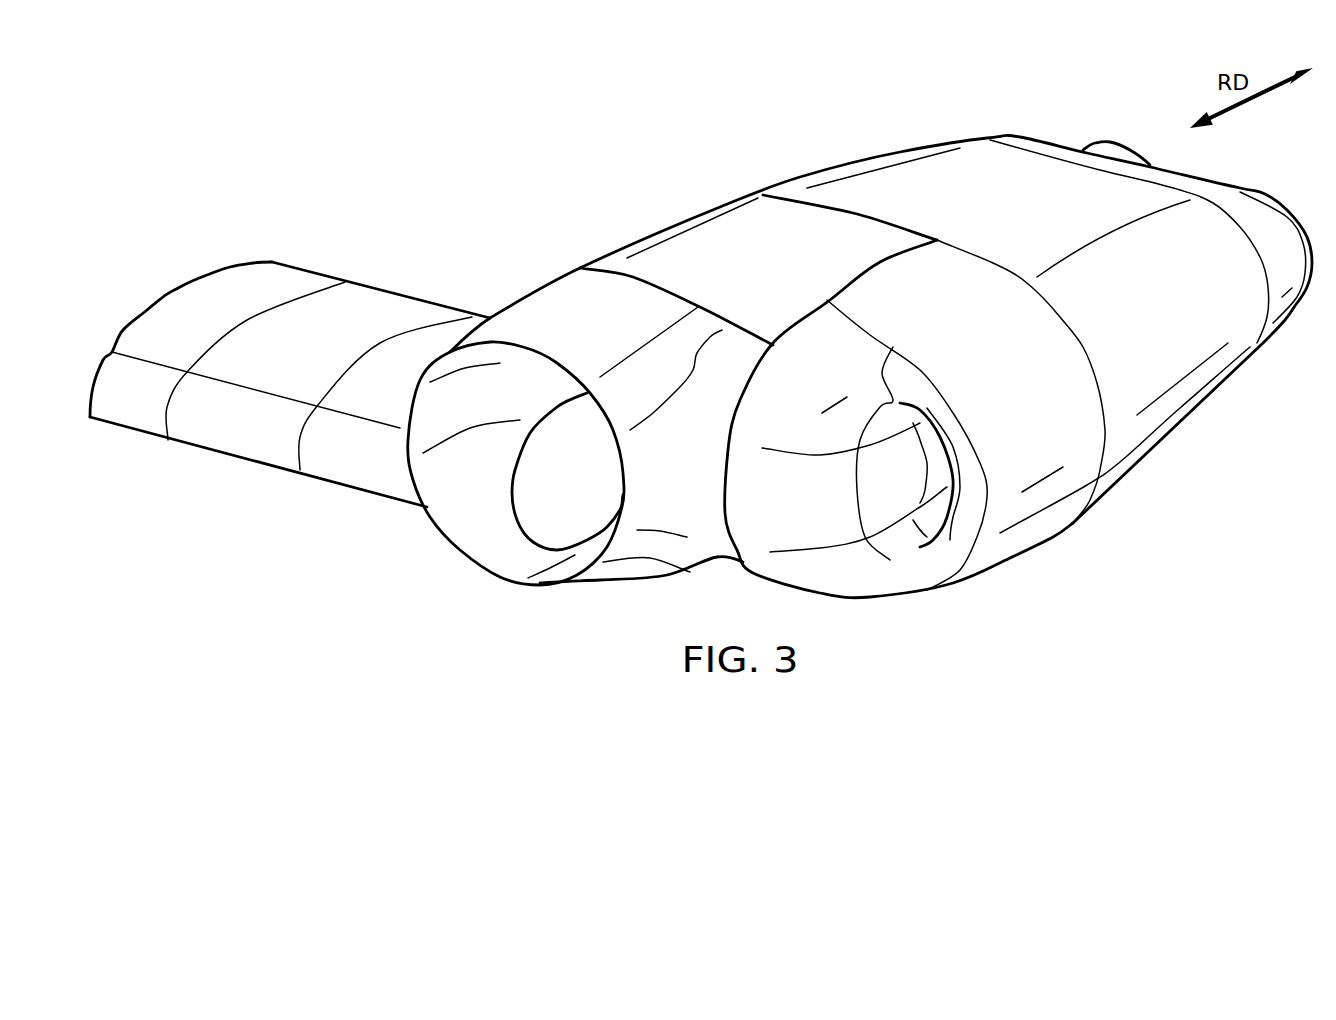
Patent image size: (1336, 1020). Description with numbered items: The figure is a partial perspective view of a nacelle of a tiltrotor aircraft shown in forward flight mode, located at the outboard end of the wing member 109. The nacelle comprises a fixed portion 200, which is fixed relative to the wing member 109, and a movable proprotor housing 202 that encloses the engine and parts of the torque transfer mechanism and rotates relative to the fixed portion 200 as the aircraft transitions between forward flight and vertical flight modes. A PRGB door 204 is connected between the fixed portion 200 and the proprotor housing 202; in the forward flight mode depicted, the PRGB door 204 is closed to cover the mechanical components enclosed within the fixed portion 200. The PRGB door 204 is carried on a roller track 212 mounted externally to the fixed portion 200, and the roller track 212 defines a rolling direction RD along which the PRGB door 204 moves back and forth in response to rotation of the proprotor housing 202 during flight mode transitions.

The wing member 109 is at (390, 302).
The fixed portion 200 is at (860, 371).
The movable proprotor housing 202 is at (628, 568).
The PRGB door 204 is at (667, 223).
The roller track 212 is at (893, 155).